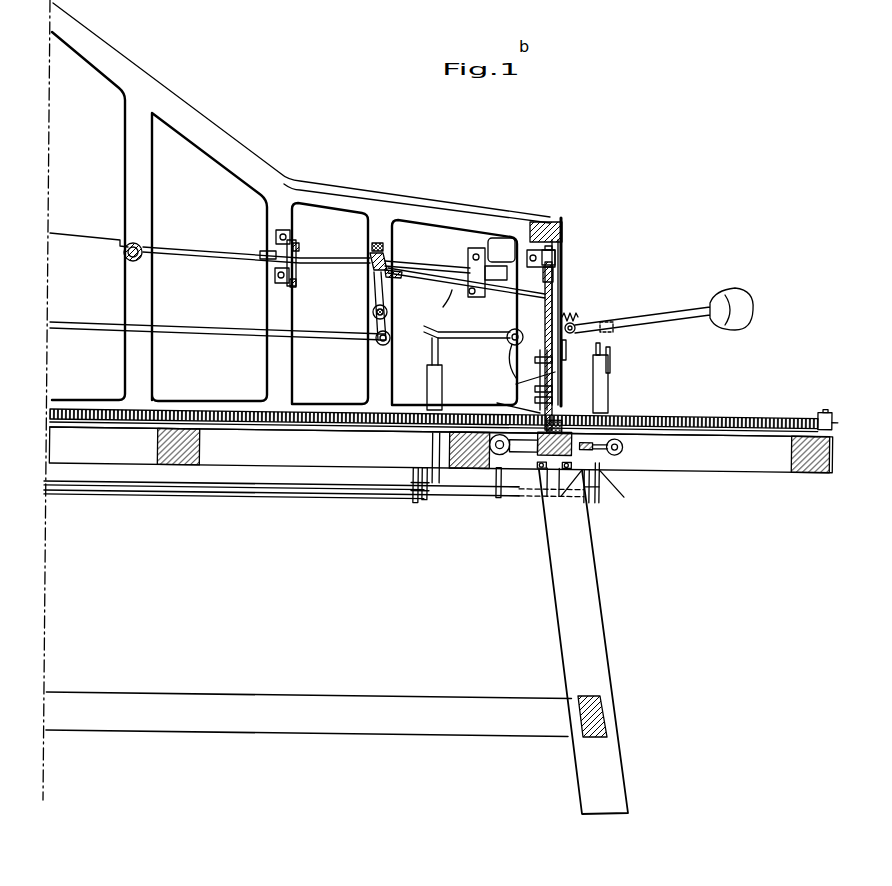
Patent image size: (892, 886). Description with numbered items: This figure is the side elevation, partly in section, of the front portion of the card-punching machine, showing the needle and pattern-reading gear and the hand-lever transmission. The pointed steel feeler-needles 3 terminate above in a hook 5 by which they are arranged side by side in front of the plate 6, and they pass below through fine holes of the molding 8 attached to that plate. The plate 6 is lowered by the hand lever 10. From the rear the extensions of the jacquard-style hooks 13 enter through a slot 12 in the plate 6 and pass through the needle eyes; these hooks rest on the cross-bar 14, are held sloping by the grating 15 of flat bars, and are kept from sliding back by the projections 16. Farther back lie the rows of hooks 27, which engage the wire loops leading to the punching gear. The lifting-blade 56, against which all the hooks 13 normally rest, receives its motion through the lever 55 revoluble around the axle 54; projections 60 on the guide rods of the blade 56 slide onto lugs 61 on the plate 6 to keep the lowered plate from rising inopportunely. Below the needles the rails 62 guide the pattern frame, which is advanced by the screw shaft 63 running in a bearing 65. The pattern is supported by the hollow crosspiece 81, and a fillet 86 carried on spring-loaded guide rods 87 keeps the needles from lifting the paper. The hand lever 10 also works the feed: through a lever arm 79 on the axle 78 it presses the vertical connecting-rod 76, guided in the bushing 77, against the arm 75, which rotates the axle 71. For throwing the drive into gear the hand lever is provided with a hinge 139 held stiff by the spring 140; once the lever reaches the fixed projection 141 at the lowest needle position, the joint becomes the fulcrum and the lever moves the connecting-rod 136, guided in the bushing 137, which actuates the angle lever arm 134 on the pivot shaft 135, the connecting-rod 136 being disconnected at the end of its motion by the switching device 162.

The feeler-needles 3 is at (560, 412).
The hook 5 is at (556, 276).
The plate 6 is at (553, 372).
The molding 8 is at (553, 396).
The hand lever 10 is at (668, 320).
The slot 12 is at (546, 296).
The hooks 13 is at (396, 278).
The cross-bar 14 is at (124, 256).
The grating 15 is at (292, 272).
The projections 16 is at (152, 251).
The hooks 27 is at (442, 306).
The axle 54 is at (373, 311).
The lever 55 is at (392, 282).
The blade 56 is at (386, 258).
The projections 60 is at (480, 298).
The lugs 61 is at (507, 273).
The rails 62 is at (678, 427).
The screw shaft 63 is at (668, 408).
The bearing 65 is at (822, 400).
The axle 71 is at (103, 490).
The arm 75 is at (428, 490).
The connecting-rod 76 is at (432, 441).
The bushing 77 is at (442, 380).
The axle 78 is at (505, 362).
The lever arm 79 is at (482, 342).
The hollow crosspiece 81 is at (545, 478).
The molding or fillet 86 is at (506, 395).
The guide rods 87 is at (525, 384).
The arm 134 is at (593, 490).
The shaft 135 is at (163, 491).
The connecting-rod 136 is at (608, 464).
The bushing 137 is at (608, 380).
The hinge 139 is at (576, 324).
The spring 140 is at (565, 300).
The fixed projection 141 is at (566, 350).
The switching device 162 is at (612, 332).